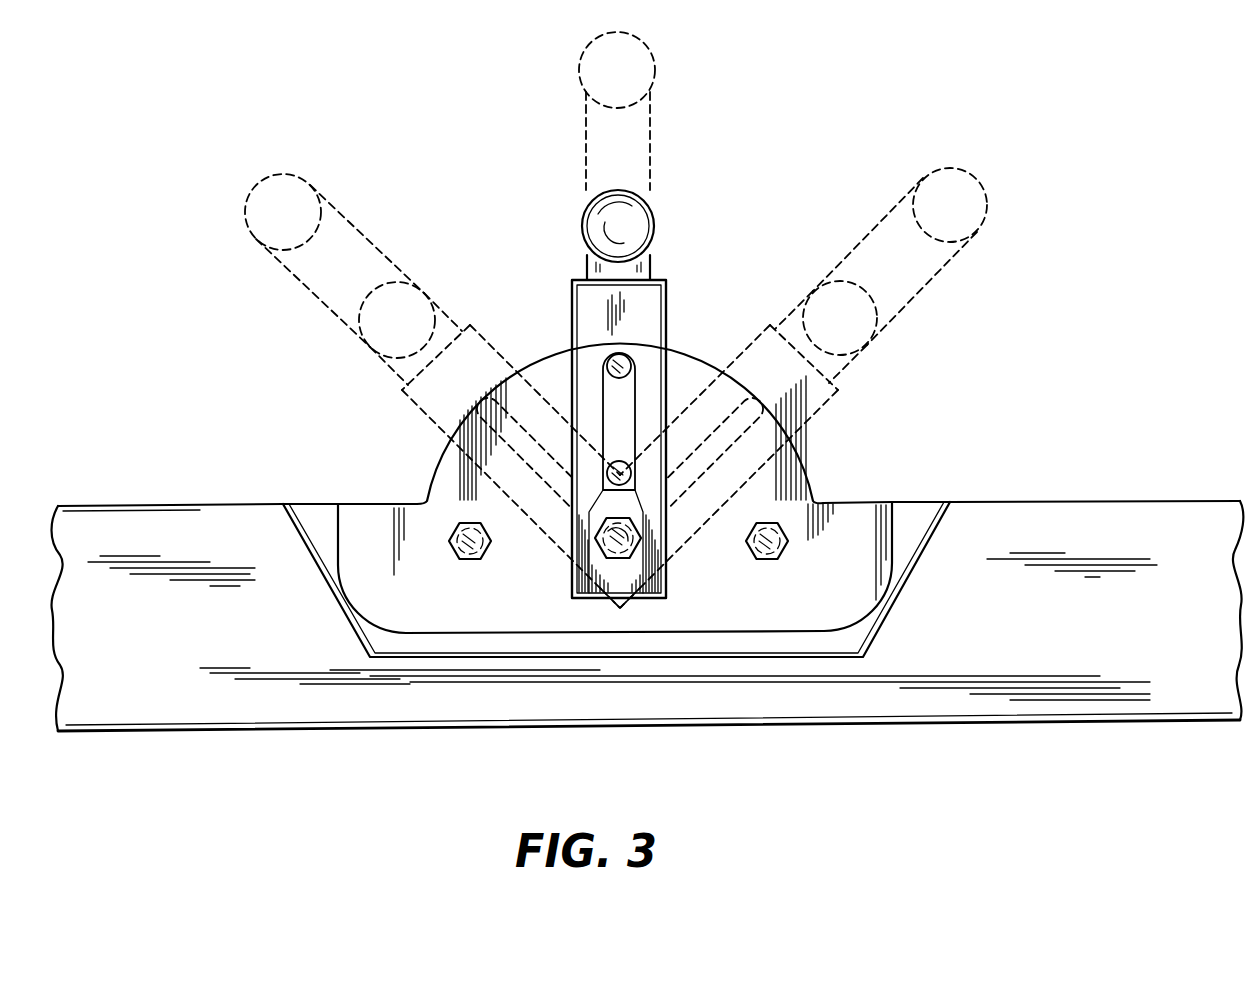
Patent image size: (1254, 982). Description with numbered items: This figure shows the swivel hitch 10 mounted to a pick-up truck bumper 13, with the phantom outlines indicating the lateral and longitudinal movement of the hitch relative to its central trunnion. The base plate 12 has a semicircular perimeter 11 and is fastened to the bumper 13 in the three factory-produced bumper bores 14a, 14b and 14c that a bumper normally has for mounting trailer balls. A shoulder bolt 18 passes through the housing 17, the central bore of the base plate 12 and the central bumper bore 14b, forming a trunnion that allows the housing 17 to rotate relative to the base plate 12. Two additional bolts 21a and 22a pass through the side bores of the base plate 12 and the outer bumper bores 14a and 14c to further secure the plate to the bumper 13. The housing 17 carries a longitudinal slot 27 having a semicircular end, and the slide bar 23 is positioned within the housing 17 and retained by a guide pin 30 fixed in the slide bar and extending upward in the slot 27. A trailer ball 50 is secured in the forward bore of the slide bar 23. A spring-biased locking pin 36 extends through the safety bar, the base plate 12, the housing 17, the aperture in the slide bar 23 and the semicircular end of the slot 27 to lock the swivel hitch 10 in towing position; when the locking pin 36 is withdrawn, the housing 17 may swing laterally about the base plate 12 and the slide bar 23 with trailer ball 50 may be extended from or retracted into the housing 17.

The swivel hitch 10 is at (1052, 336).
The semicircular perimeter 11 is at (806, 457).
The base plate 12 is at (853, 540).
The truck bumper 13 is at (1123, 525).
The bumper bore 14a is at (814, 489).
The bumper bore 14b is at (670, 568).
The bumper bore 14c is at (446, 520).
The housing 17 is at (667, 318).
The shoulder bolt 18 is at (600, 552).
The bolt 21a is at (463, 559).
The bolt 22a is at (768, 562).
The slide bar 23 is at (642, 267).
The longitudinal slot 27 is at (626, 404).
The guide pin 30 is at (614, 464).
The locking pin 36 is at (611, 356).
The trailer ball 50 is at (640, 217).